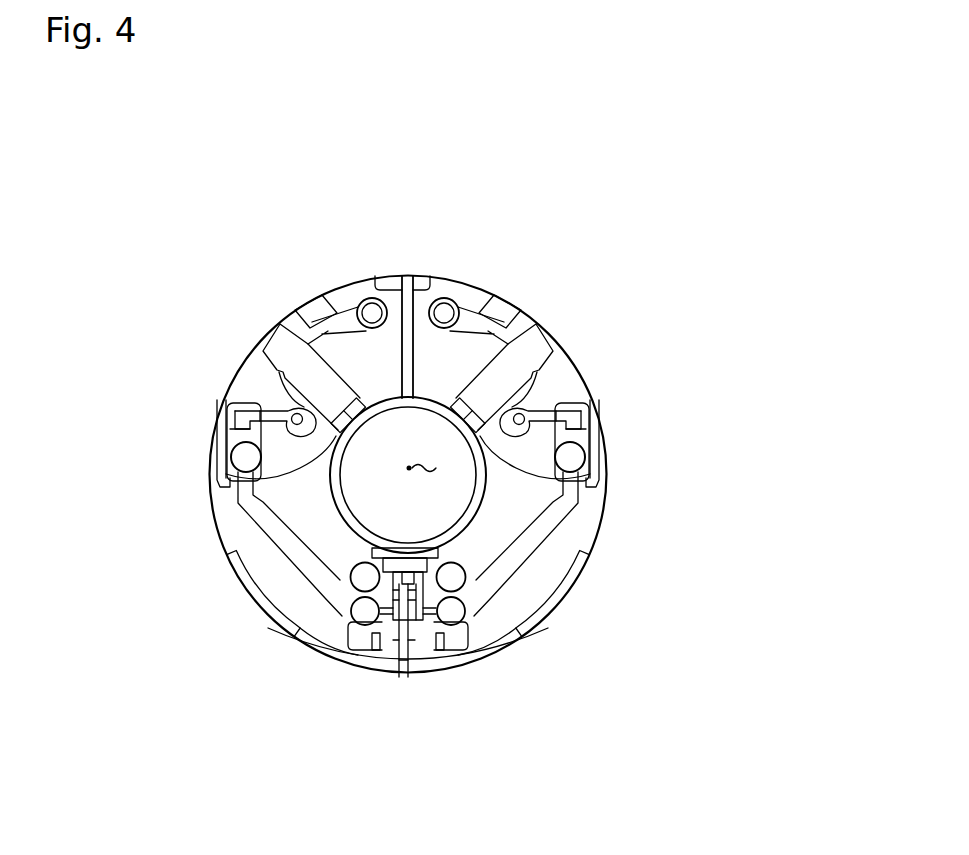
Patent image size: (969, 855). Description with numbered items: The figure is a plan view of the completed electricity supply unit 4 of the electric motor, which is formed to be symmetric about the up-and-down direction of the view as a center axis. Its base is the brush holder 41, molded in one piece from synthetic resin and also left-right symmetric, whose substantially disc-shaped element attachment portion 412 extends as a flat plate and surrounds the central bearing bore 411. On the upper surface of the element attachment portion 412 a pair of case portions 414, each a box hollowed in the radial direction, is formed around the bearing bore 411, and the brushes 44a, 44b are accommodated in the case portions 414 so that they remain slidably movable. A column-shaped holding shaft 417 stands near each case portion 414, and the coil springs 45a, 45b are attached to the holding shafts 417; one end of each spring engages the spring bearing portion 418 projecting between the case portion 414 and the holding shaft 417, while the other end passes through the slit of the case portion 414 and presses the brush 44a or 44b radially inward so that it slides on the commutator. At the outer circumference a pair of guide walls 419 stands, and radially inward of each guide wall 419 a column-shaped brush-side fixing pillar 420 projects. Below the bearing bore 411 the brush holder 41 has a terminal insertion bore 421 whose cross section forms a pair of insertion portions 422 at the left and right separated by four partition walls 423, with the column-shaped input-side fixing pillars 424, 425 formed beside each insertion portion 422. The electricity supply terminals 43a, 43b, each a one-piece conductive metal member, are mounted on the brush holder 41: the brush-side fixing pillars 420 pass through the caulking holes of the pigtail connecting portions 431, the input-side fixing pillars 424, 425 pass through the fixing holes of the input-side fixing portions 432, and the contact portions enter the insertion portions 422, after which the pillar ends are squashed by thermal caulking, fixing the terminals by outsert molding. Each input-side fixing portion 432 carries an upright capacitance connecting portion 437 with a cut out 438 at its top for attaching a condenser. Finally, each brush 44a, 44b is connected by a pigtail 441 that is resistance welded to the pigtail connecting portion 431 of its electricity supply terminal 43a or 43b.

The electricity supply unit 4 is at (505, 178).
The brush holder 41 is at (529, 302).
The bearing bore 411 is at (556, 588).
The element attachment portion 412 is at (505, 650).
The case portion 414 is at (302, 370).
The holding shaft 417 is at (406, 275).
The spring bearing portion 418 is at (318, 300).
The guide wall 419 is at (230, 466).
The brush-side fixing pillar 420 is at (247, 455).
The terminal insertion bore 421 is at (320, 636).
The insertion portion 422 is at (348, 600).
The partition wall 423 is at (400, 612).
The input-side fixing pillar 424 is at (350, 572).
The input-side fixing pillar 425 is at (346, 622).
The pigtail connecting portion 431 is at (235, 432).
The input-side fixing portion 432 is at (370, 642).
The capacitance connecting portion 437 is at (393, 657).
The cut out 438 is at (410, 642).
The electricity supply terminal 43a is at (245, 503).
The electricity supply terminal 43b is at (568, 510).
The brush 44a is at (243, 463).
The brush 44b is at (565, 490).
The pigtail 441 is at (290, 400).
The coil spring 45a is at (372, 298).
The coil spring 45b is at (444, 298).